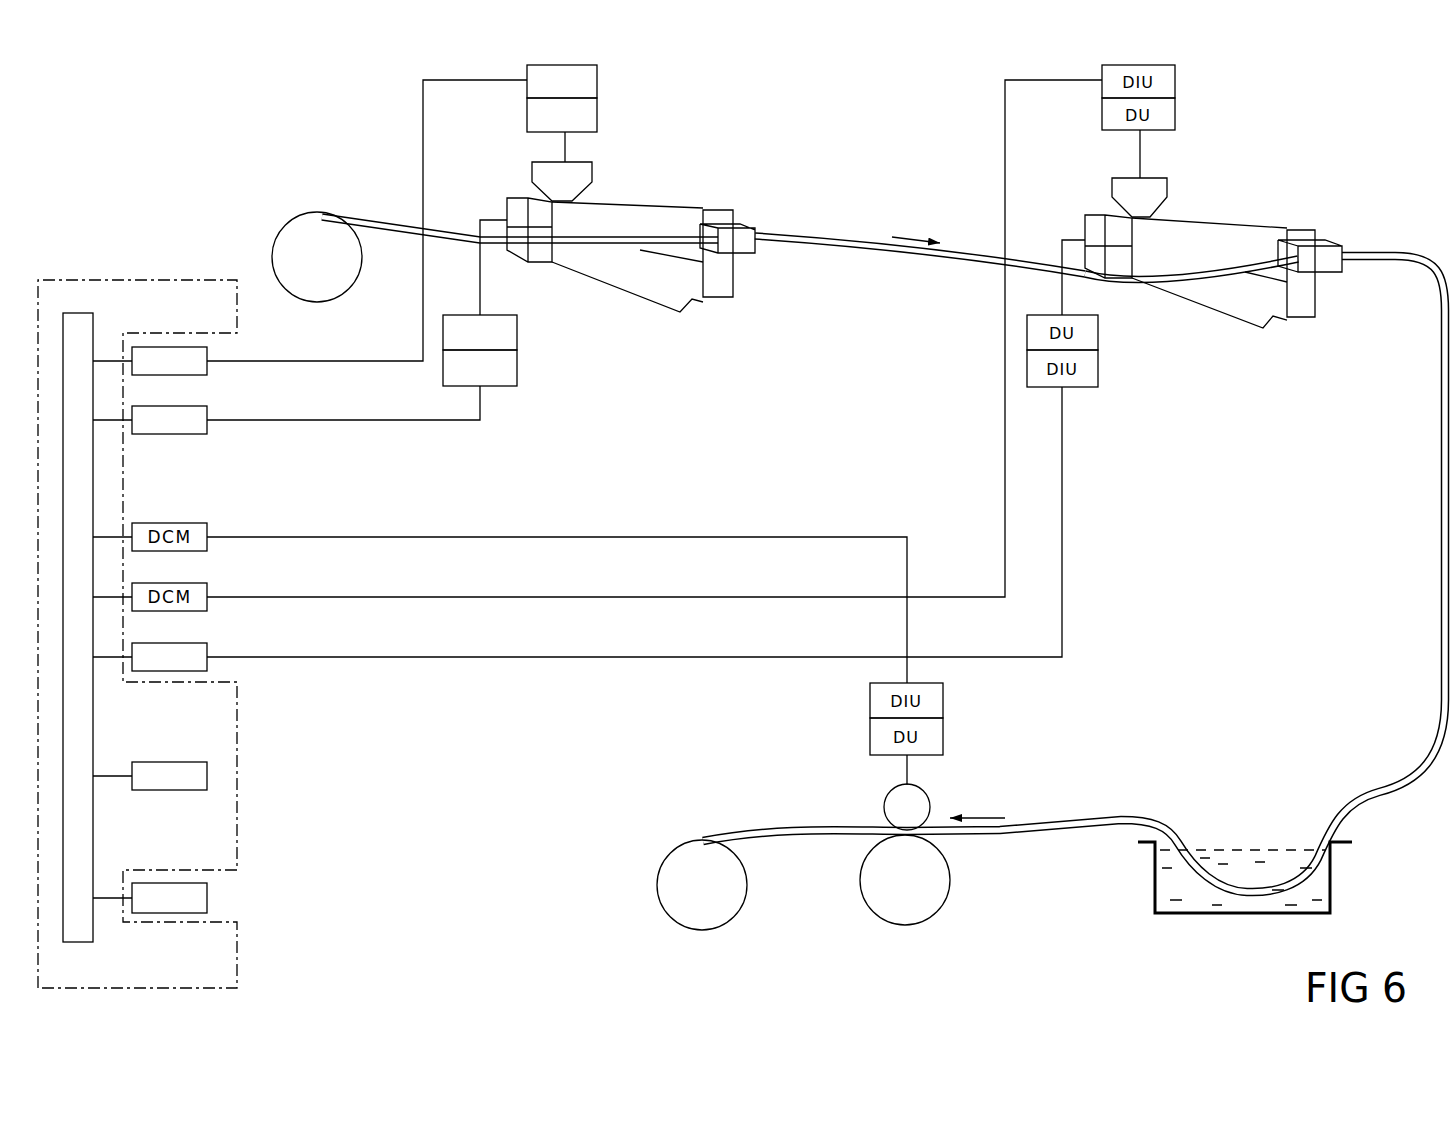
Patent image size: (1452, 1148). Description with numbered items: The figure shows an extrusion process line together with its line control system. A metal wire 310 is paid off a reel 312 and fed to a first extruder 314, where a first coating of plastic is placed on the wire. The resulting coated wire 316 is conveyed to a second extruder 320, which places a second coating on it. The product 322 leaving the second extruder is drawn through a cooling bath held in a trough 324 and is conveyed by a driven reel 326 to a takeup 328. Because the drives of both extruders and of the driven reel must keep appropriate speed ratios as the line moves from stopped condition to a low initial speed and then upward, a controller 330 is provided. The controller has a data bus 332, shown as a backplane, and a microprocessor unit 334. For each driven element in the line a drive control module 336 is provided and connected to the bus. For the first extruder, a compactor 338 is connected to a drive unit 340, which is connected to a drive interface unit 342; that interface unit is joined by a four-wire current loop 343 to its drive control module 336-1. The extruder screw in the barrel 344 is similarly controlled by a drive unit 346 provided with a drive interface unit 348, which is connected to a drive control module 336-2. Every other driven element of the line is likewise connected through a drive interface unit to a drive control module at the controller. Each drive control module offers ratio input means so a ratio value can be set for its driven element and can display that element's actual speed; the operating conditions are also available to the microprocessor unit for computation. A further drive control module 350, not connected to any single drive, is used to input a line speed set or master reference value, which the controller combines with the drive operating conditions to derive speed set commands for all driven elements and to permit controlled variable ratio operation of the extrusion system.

The metal wire 310 is at (393, 219).
The reel 312 is at (277, 225).
The first extruder 314 is at (631, 206).
The coated wire 316 is at (840, 250).
The second extruder 320 is at (1255, 203).
The product 322 is at (1440, 462).
The trough 324 is at (1340, 881).
The driven reel 326 is at (933, 800).
The takeup 328 is at (668, 843).
The controller 330 is at (237, 950).
The data bus 332 is at (93, 713).
The microprocessor unit 334 is at (207, 766).
The drive control module 336 is at (207, 648).
The drive control module 336-1 is at (208, 350).
The drive control module 336-2 is at (207, 410).
The compactor 338 is at (590, 168).
The drive unit 340 is at (597, 110).
The drive interface unit 342 is at (597, 77).
The 4-wire current loop 343 is at (325, 362).
The barrel 344 is at (704, 190).
The drive unit 346 is at (517, 332).
The drive interface unit 348 is at (517, 375).
The drive control module 350 is at (207, 897).